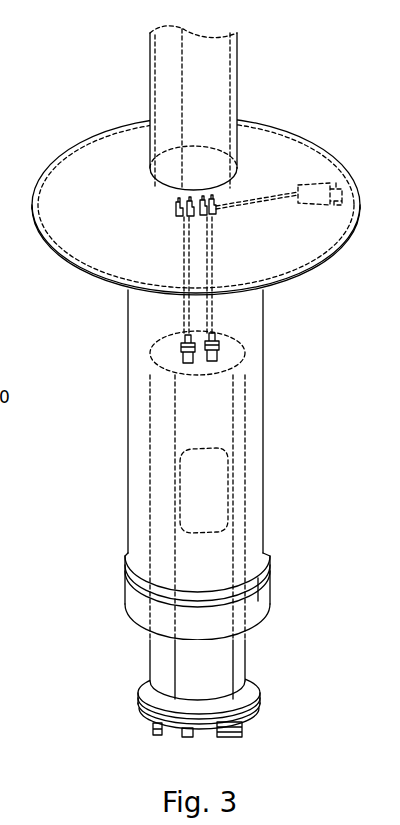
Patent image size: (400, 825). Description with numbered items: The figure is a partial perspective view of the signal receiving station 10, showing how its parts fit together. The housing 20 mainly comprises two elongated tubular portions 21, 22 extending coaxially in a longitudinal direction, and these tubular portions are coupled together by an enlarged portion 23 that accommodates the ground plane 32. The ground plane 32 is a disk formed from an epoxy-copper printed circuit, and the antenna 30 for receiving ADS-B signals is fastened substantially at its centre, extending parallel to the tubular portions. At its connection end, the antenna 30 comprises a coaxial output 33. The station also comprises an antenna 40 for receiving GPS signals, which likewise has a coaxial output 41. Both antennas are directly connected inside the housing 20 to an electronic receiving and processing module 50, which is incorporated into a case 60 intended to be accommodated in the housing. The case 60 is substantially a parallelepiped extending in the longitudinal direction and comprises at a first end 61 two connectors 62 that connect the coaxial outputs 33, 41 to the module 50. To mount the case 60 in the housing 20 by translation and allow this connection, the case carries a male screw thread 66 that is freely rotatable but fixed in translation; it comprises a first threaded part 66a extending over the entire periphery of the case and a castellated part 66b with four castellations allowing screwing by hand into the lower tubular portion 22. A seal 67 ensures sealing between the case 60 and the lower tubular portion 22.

The signal receiving station 10 is at (92, 450).
The housing 20 is at (308, 90).
The tubular portion 21 is at (238, 33).
The tubular portion 22 is at (258, 405).
The enlarged portion 23 is at (47, 190).
The antenna for receiving ADS-B signals 30 is at (165, 48).
The ground plane 32 is at (75, 162).
The coaxial output 33 is at (180, 216).
The antenna for receiving GPS signals 40 is at (325, 180).
The coaxial output 41 is at (214, 215).
The electronic receiving and processing module 50 is at (220, 495).
The case 60 is at (232, 657).
The first end 61 is at (237, 358).
The connectors 62 is at (178, 343).
The male screw thread 66 is at (105, 713).
The first threaded part 66a is at (258, 695).
The castellated part 66b is at (150, 733).
The seal 67 is at (148, 673).